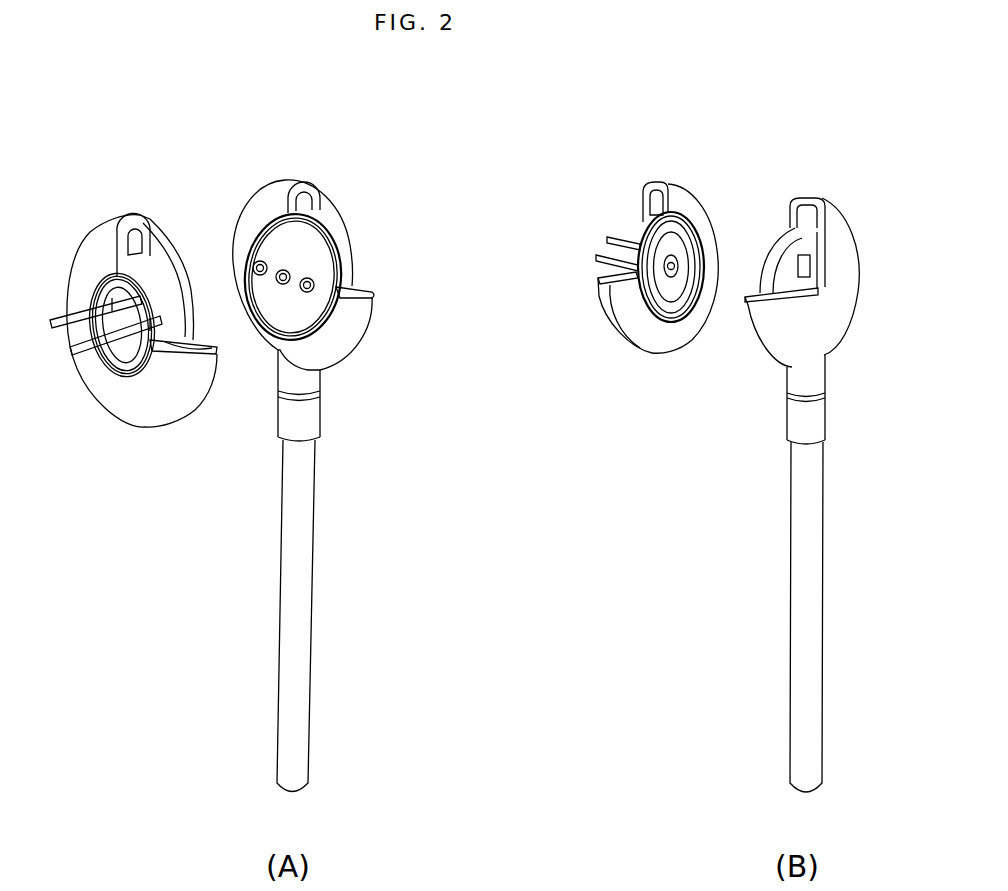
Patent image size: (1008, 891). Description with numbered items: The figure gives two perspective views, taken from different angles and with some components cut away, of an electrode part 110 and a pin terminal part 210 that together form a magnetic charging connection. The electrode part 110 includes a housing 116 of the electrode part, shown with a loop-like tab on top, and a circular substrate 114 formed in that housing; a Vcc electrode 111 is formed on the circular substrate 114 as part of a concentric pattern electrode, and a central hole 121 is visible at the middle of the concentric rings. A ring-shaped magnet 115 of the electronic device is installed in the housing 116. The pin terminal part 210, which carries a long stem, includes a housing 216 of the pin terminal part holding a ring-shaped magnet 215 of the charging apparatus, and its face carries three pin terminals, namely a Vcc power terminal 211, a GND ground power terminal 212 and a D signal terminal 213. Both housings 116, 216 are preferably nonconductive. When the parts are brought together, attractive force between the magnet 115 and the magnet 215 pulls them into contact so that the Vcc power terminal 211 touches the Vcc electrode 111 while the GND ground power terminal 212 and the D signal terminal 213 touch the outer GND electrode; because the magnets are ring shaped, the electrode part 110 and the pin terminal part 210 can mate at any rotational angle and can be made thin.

In FIG. 2A, the electrode part 110 is at (143, 331).
In FIG. 2B, the electrode part 110 is at (638, 296).
In FIG. 2B, the Vcc electrode 111 is at (663, 280).
In FIG. 2A, the circular substrate 114 is at (158, 280).
In FIG. 2A, the magnet of the electronic device 115 is at (137, 360).
In FIG. 2A, the housing of the electrode part 116 is at (178, 403).
In FIG. 2B, the center hole 121 is at (681, 285).
In FIG. 2A, the pin terminal part 210 is at (348, 443).
In FIG. 2B, the pin terminal part 210 is at (849, 183).
In FIG. 2A, the Vcc power terminal 211 is at (292, 272).
In FIG. 2A, the GND ground power terminal 212 is at (325, 282).
In FIG. 2A, the D signal terminal 213 is at (266, 262).
In FIG. 2A, the magnet of the charging apparatus 215 is at (374, 293).
In FIG. 2A, the housing of the pin terminal part 216 is at (343, 353).